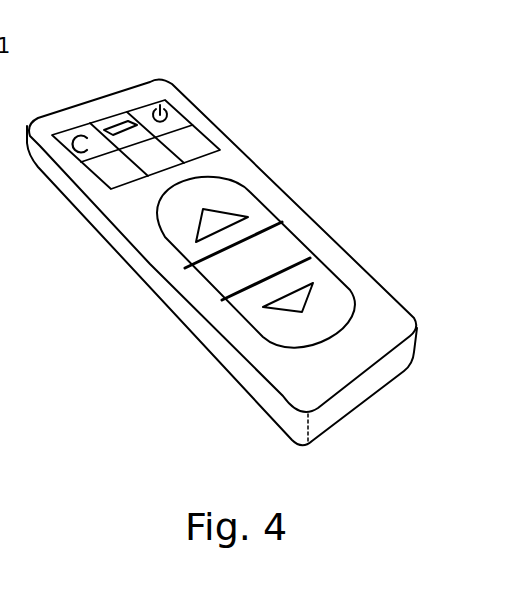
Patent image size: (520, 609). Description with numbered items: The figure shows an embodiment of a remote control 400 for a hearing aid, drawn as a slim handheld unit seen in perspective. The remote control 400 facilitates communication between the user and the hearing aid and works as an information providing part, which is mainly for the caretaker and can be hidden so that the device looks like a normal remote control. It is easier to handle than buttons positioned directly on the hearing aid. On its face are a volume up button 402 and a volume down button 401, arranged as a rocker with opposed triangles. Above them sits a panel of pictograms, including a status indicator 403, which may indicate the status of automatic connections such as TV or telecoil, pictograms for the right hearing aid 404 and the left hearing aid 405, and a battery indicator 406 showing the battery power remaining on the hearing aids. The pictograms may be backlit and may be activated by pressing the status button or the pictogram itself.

The remote control 400 is at (264, 124).
The volume down button 401 is at (290, 277).
The volume up button 402 is at (250, 213).
The status indicator 403 is at (143, 180).
The right hearing aid pictogram 404 is at (170, 113).
The left hearing aid pictogram 405 is at (80, 127).
The battery indicator 406 is at (117, 113).